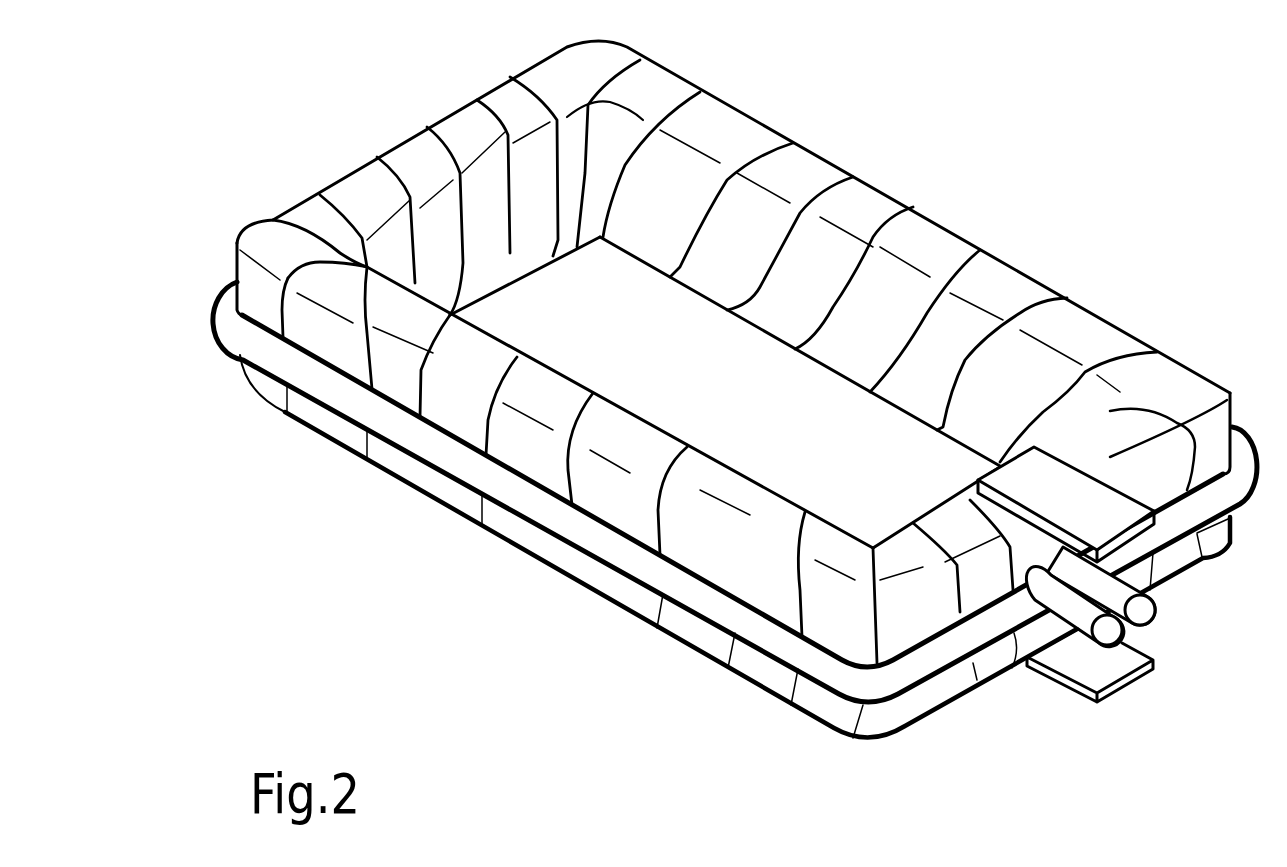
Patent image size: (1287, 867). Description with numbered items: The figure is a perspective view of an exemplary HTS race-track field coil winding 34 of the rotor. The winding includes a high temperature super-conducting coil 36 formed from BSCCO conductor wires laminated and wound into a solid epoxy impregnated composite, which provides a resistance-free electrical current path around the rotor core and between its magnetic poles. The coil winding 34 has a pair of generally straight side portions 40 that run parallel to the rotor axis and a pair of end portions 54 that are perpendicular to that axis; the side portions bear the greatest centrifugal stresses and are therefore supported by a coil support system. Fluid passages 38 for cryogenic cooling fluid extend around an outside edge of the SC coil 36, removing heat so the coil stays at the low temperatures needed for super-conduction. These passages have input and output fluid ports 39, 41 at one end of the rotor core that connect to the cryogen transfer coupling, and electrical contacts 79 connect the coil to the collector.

The race-track field coil winding 34 is at (352, 70).
The high temperature super-conducting coil 36 is at (988, 278).
The fluid passages 38 is at (593, 547).
The input fluid port 39 is at (1127, 637).
The side portions 40 is at (917, 222).
The output fluid port 41 is at (1148, 625).
The end portions 54 is at (332, 210).
The electrical contacts 79 is at (1076, 668).